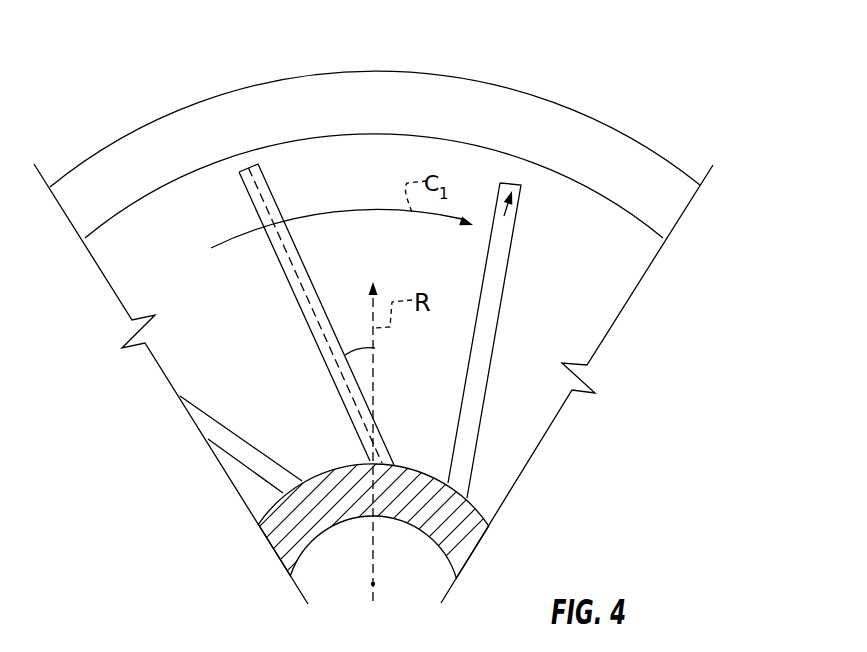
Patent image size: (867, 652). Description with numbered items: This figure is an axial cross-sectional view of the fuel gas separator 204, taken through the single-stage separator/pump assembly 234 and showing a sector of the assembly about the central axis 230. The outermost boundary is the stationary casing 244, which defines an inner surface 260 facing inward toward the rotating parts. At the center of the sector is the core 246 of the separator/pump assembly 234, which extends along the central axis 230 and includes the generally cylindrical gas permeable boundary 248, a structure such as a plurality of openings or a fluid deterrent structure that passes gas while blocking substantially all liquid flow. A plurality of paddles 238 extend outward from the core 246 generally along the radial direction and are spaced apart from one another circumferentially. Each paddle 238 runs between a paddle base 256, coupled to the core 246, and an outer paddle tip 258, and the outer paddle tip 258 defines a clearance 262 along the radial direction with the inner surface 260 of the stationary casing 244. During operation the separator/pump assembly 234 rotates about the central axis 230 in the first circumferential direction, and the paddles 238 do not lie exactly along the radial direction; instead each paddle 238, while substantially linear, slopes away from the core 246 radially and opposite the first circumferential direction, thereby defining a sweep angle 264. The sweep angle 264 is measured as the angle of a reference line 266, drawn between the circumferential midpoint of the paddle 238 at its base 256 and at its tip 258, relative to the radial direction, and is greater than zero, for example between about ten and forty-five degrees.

The fuel gas separator 204 is at (589, 56).
The central axis 230 is at (378, 585).
The single-stage separator/pump assembly 234 is at (600, 305).
The paddles 238 is at (280, 207).
The stationary casing 244 is at (446, 88).
The core 246 is at (490, 492).
The gas permeable boundary 248 is at (263, 545).
The paddle base 256 is at (408, 430).
The outer paddle tip 258 is at (233, 155).
The inner surface 260 is at (364, 153).
The clearance 262 is at (535, 142).
The sweep angle 264 is at (360, 348).
The reference line 266 is at (287, 278).